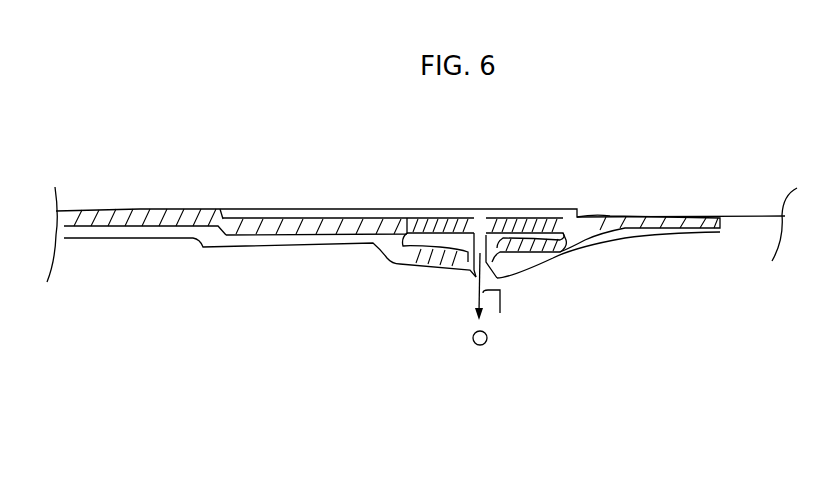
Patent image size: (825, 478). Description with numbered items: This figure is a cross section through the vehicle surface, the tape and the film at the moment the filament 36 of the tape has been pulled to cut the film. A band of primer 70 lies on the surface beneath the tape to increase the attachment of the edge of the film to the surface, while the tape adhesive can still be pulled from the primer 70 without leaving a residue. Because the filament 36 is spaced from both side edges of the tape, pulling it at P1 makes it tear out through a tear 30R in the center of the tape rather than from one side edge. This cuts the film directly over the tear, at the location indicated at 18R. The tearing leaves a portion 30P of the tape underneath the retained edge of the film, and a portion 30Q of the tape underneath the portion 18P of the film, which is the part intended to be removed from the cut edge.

The band of primer 70 is at (306, 213).
The portion of the tape 30P is at (439, 229).
The tear 30R is at (482, 237).
The portion of the tape 30Q is at (511, 217).
The portion of the film 18P is at (594, 224).
The cut location of the film 18R is at (470, 272).
The pull point P1 is at (495, 337).
The filament 36 is at (480, 347).